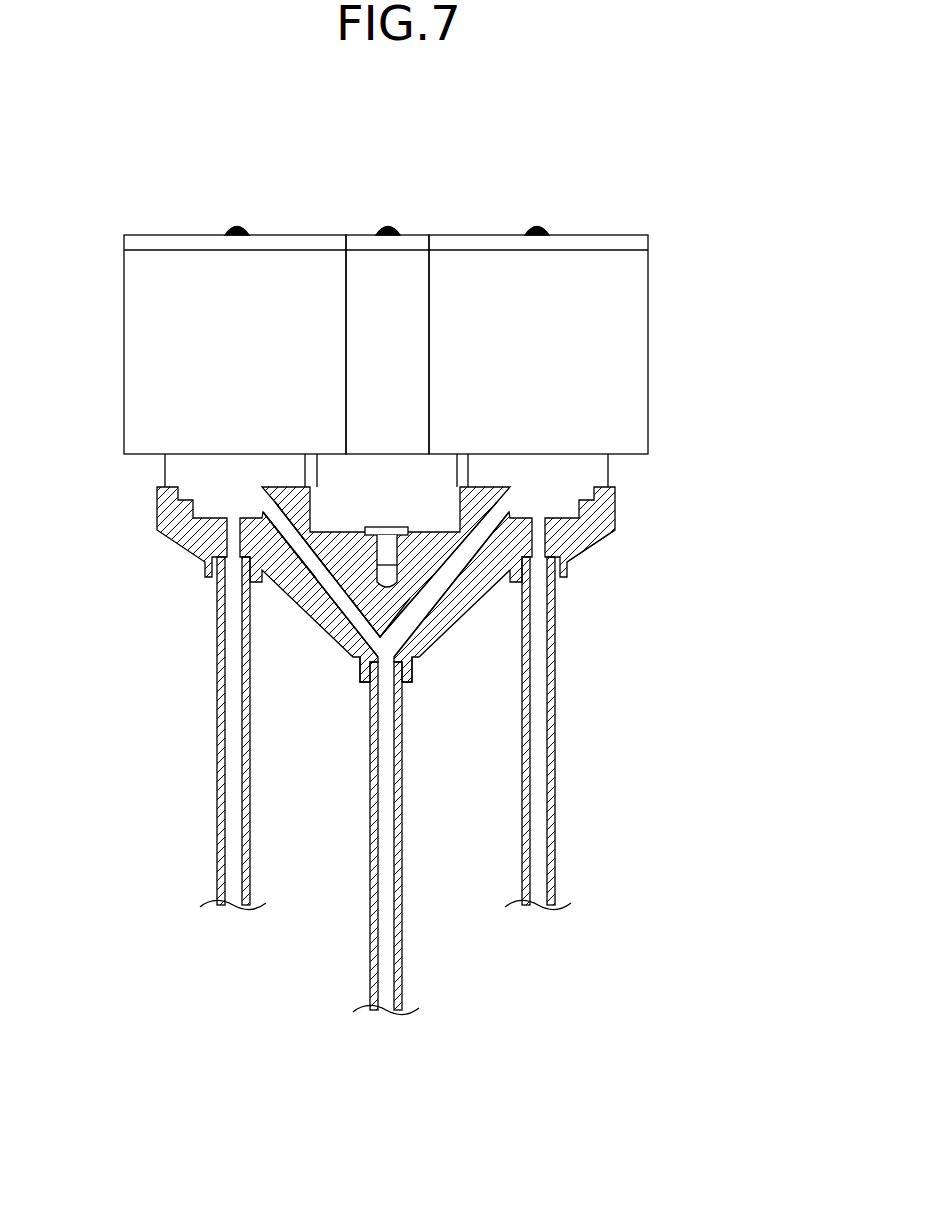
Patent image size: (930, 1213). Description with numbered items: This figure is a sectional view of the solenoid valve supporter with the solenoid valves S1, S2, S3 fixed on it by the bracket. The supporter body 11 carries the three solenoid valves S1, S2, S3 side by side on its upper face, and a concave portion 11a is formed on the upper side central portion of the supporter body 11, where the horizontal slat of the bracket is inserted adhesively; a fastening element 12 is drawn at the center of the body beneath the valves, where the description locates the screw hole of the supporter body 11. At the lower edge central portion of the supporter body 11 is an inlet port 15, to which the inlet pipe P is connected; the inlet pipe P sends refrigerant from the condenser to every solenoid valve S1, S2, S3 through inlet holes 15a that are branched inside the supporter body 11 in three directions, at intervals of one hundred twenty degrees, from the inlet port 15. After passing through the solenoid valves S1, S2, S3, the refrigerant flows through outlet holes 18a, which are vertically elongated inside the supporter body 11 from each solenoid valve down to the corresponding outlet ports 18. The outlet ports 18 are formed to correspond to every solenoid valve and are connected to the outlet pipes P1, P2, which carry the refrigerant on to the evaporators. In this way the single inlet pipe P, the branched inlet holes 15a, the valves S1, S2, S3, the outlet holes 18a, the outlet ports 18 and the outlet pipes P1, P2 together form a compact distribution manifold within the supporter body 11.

The solenoid valve S1 is at (143, 352).
The solenoid valve S2 is at (638, 348).
The solenoid valve S3 is at (365, 262).
The inlet pipe P is at (370, 878).
The outlet pipe P1 is at (217, 711).
The outlet pipe P2 is at (555, 780).
The supporter body 11 is at (458, 585).
The concave portion 11a is at (325, 576).
The plug 12 is at (383, 585).
The inlet port 15 is at (405, 688).
The inlet holes 15a is at (424, 638).
The outlet ports 18 is at (556, 585).
The outlet holes 18a is at (548, 553).